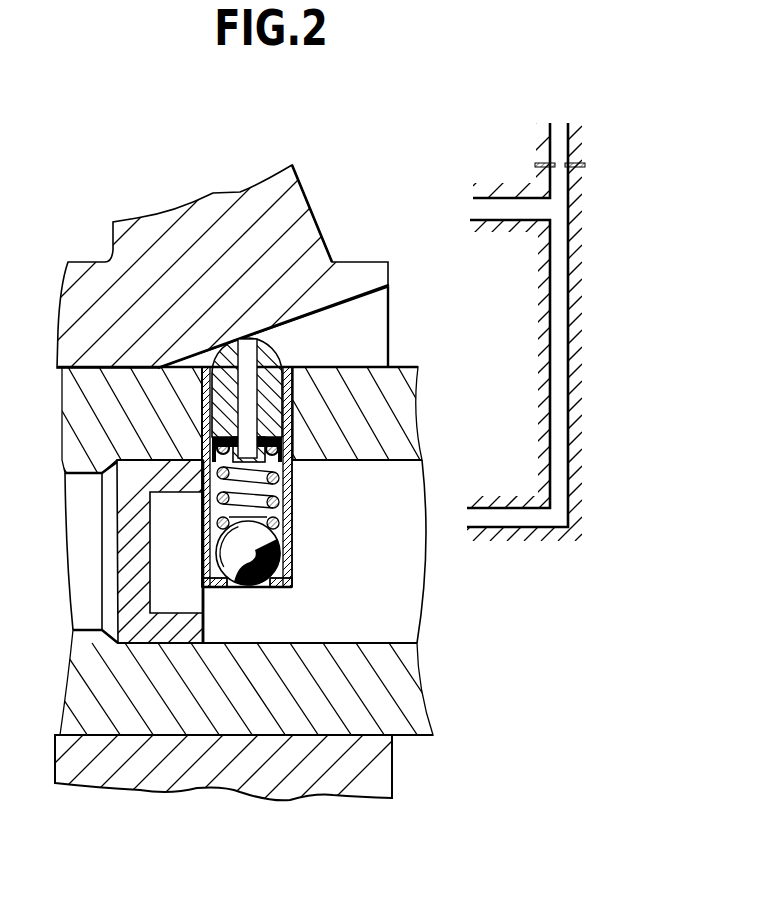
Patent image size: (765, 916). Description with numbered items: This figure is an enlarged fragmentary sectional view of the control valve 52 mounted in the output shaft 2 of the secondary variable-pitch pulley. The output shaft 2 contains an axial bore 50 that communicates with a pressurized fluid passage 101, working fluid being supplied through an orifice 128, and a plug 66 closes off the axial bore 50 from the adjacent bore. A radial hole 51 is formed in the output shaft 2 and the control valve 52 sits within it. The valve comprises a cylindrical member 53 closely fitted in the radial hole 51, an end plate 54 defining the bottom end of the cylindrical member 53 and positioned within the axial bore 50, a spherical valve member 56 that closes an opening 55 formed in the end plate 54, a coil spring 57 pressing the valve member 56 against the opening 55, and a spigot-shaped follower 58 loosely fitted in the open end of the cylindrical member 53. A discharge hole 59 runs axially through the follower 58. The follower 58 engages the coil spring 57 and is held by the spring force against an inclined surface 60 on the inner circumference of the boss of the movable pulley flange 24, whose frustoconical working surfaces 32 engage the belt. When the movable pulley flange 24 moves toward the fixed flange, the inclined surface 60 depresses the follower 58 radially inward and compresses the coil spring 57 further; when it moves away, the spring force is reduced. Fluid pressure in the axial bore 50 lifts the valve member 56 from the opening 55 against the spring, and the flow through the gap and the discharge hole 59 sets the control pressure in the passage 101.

The output shaft 2 is at (393, 423).
The movable pulley flange 24 is at (297, 225).
The frustoconical working surfaces 32 is at (300, 182).
The axial bore 50 is at (402, 503).
The radial hole 51 is at (203, 410).
The control valve 52 is at (294, 573).
The cylindrical member 53 is at (293, 507).
The end plate 54 is at (220, 588).
The opening 55 is at (262, 588).
The spherical valve member 56 is at (285, 548).
The coil spring 57 is at (220, 503).
The follower 58 is at (272, 362).
The discharge hole 59 is at (246, 338).
The inclined surface 60 is at (358, 298).
The plug 66 is at (132, 583).
The pressurized fluid passage 101 is at (503, 213).
The orifice 128 is at (555, 160).